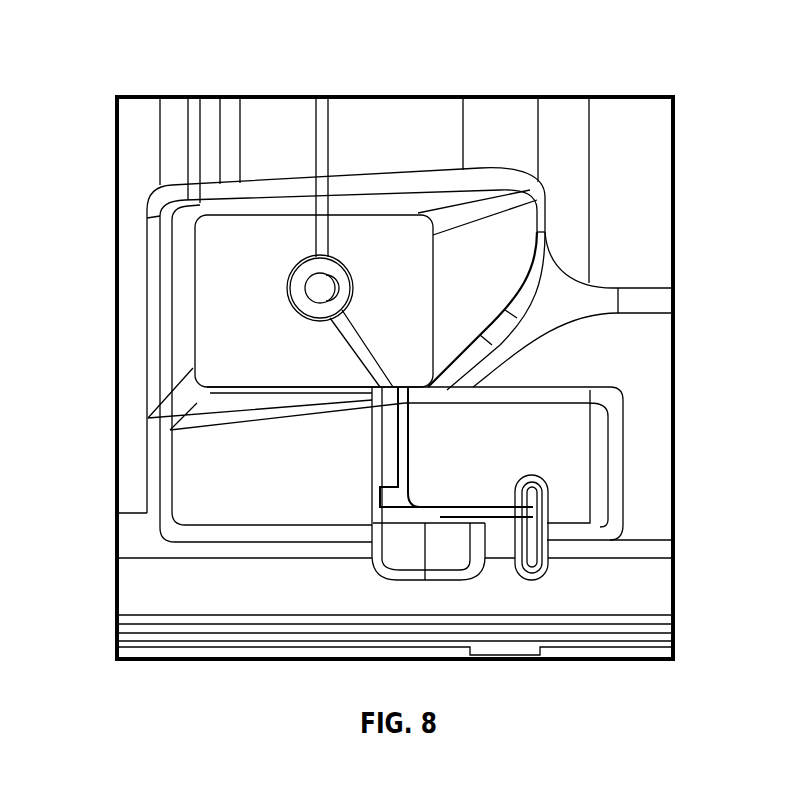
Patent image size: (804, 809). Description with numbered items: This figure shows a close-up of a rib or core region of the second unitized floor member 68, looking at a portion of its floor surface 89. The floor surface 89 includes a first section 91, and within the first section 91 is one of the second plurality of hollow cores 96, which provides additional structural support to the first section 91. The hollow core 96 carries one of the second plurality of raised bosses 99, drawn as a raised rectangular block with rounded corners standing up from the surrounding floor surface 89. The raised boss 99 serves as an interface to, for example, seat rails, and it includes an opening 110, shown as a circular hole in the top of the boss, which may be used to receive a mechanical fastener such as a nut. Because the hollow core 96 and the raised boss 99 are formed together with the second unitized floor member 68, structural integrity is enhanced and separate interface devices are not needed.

The second unitized floor member 68 is at (639, 78).
The second plurality of hollow cores 96 is at (178, 122).
The opening 110 is at (316, 292).
The second plurality of raised bosses 99 is at (247, 343).
The floor surface 89 is at (633, 233).
The first section 91 is at (562, 437).